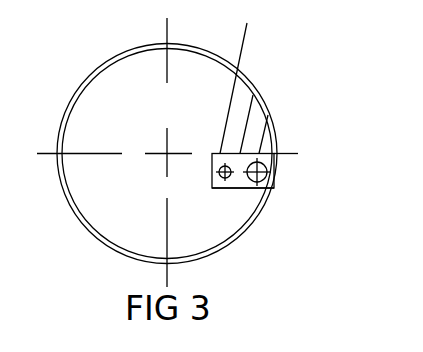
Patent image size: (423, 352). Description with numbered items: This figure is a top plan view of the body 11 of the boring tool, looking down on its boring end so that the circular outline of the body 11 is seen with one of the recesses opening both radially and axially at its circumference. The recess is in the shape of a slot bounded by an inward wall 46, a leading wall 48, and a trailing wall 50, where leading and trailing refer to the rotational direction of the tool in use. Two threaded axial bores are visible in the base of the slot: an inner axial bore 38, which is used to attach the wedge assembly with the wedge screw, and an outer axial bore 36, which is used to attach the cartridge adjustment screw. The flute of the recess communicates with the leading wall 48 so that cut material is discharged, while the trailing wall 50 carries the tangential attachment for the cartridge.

The body 11 is at (221, 152).
The outer axial bore 36 is at (314, 185).
The inner axial bore 38 is at (264, 229).
The inward wall 46 is at (162, 203).
The leading wall 48 is at (247, 23).
The trailing wall 50 is at (283, 225).